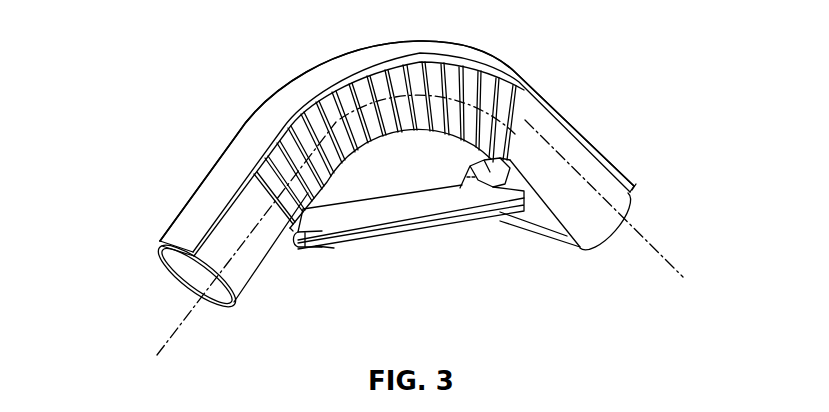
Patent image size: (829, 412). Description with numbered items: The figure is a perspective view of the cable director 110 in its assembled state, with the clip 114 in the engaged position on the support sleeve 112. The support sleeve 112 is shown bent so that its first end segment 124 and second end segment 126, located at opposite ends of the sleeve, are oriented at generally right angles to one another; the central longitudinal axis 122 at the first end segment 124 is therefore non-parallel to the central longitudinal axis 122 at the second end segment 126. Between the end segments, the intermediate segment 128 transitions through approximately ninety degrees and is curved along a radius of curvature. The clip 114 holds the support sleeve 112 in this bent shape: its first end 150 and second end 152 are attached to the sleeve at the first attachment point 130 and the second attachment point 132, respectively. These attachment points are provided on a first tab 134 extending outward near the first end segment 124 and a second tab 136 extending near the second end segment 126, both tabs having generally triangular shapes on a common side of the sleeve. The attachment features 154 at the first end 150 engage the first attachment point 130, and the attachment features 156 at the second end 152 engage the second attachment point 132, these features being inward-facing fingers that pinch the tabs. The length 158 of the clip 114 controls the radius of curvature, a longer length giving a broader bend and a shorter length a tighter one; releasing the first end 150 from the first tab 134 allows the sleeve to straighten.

The cable director 110 is at (292, 54).
The support sleeve 112 is at (267, 120).
The clip 114 is at (415, 201).
The central longitudinal axis 122 is at (658, 243).
The first end segment 124 is at (198, 223).
The second end segment 126 is at (607, 154).
The intermediate segment 128 is at (391, 79).
The first attachment point 130 is at (303, 220).
The second attachment point 132 is at (503, 178).
The first tab 134 is at (277, 268).
The second tab 136 is at (562, 232).
The first end 150 is at (303, 252).
The second end 152 is at (523, 185).
The attachment features 154 is at (308, 185).
The attachment features 156 is at (512, 200).
The length 158 is at (403, 229).